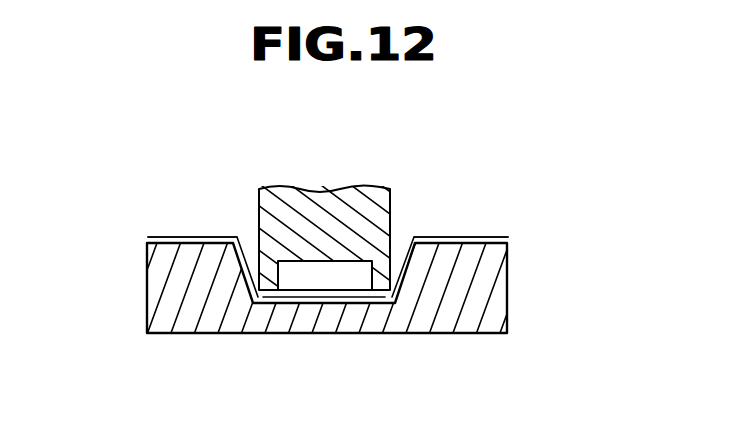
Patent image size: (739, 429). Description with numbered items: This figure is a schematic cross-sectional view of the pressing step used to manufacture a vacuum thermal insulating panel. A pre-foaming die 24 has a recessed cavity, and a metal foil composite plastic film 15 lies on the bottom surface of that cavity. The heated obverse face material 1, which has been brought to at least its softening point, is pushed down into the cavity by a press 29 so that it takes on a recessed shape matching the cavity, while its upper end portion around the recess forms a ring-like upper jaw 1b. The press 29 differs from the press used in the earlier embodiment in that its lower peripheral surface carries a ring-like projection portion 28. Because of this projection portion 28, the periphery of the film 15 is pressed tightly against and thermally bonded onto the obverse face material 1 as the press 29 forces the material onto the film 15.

The obverse face material 1 is at (487, 237).
The ring-like upper jaw 1b is at (148, 238).
The metal foil composite plastic film 15 is at (340, 298).
The pre-foaming die 24 is at (487, 296).
The ring-like projection portion 28 is at (270, 283).
The press 29 is at (383, 221).